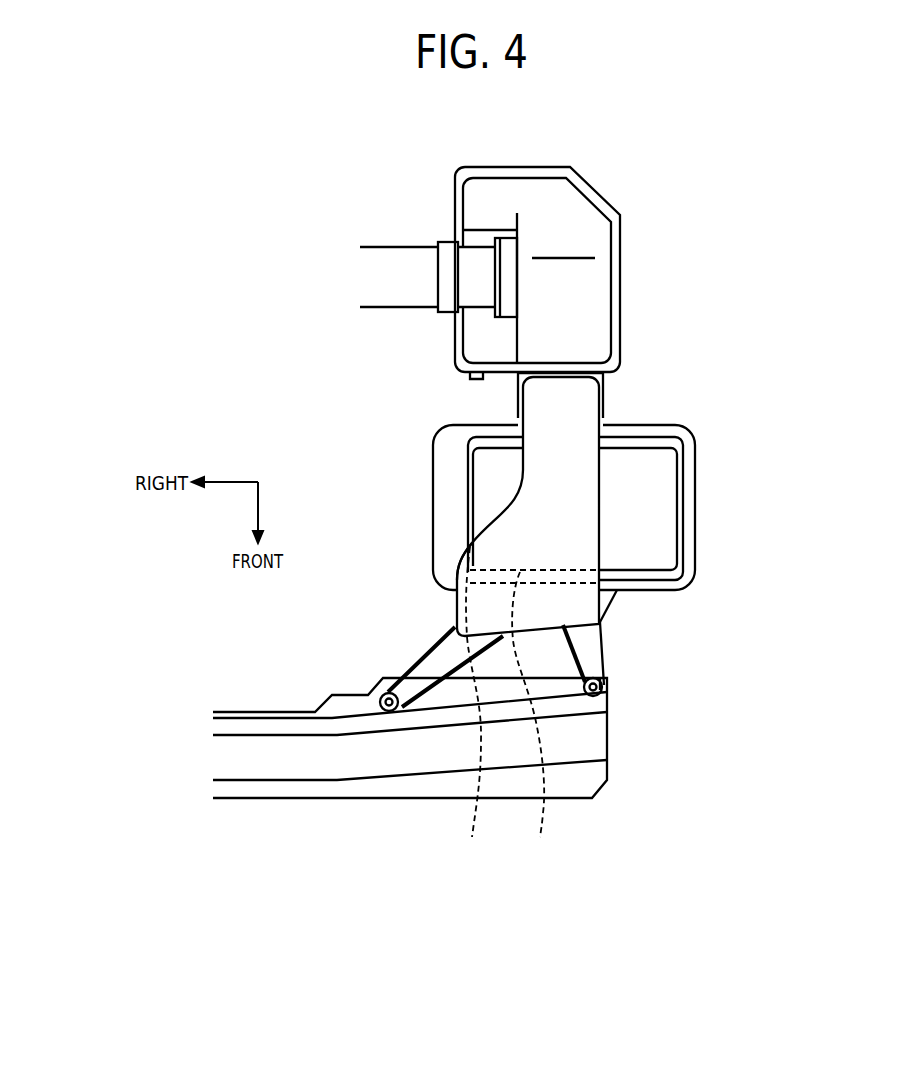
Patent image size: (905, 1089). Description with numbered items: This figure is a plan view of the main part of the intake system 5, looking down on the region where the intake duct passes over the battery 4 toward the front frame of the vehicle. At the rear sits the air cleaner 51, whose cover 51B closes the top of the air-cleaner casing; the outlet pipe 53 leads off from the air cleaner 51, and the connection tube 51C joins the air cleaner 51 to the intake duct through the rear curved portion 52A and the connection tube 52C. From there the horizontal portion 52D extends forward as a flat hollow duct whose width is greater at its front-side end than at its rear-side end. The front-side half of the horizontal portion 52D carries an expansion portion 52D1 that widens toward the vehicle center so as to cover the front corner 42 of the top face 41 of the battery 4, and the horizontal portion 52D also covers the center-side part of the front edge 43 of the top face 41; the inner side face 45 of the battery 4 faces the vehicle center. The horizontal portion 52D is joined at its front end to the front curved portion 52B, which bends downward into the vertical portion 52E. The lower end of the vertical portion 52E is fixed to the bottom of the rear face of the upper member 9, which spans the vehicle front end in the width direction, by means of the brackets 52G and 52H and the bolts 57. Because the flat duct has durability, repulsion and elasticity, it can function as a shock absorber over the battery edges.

The battery 4 is at (527, 504).
The intake system 5 is at (530, 445).
The upper member 9 is at (410, 795).
The top face 41 is at (521, 508).
The front corner 42 is at (470, 710).
The front edge 43 is at (532, 723).
The inner side face 45 is at (519, 509).
The air cleaner 51 is at (598, 273).
The cover 51B is at (580, 287).
The connection tube 51C is at (494, 395).
The rear curved portion 52A is at (618, 401).
The front curved portion 52B is at (601, 604).
The connection tube 52C is at (611, 401).
The horizontal portion 52D is at (611, 553).
The expansion portion 52D1 is at (404, 572).
The vertical portion 52E is at (619, 651).
The bracket 52G is at (416, 664).
The bracket 52H is at (651, 684).
The outlet pipe 53 is at (438, 240).
The bolt 57 is at (493, 713).